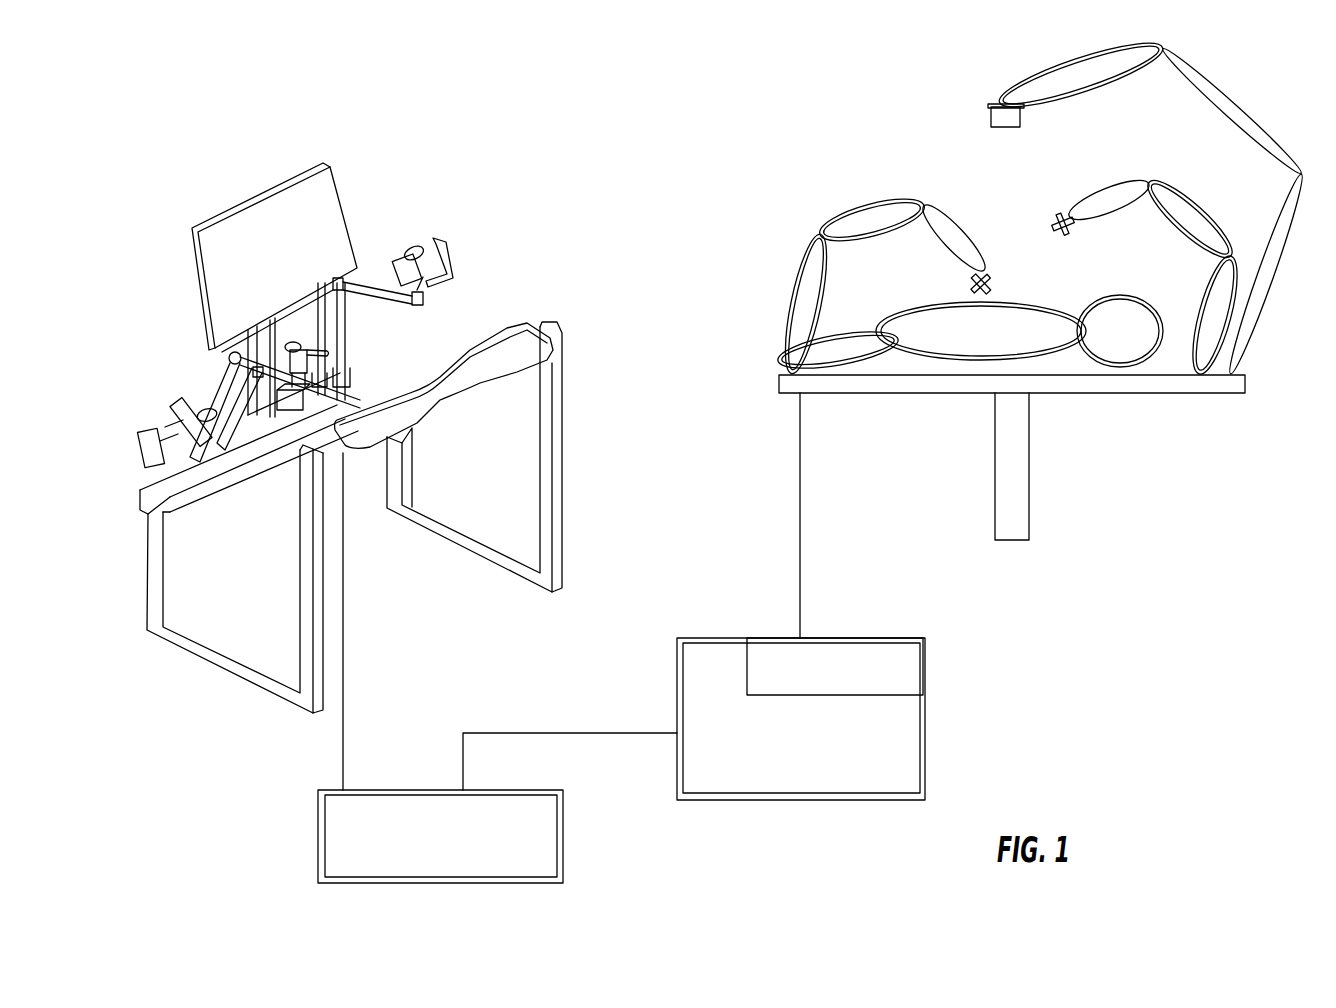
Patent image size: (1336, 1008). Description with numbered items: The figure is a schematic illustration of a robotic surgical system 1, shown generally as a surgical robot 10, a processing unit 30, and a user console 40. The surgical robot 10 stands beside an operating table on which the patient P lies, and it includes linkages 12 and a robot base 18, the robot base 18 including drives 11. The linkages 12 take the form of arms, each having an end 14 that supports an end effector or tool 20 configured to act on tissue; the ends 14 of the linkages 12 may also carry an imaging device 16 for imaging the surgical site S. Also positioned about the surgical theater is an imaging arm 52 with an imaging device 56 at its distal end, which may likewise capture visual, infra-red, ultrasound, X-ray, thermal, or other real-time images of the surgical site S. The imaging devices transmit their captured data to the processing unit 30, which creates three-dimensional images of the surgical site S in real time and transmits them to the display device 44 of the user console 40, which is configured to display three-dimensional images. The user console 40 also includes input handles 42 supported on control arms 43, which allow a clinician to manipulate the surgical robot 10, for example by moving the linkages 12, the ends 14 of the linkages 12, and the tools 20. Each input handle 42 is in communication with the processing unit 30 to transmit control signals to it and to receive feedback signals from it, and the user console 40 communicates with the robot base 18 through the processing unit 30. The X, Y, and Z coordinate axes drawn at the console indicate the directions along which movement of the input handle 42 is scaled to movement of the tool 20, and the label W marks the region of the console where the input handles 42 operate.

The robotic surgical system 1 is at (540, 115).
The surgical robot 10 is at (881, 93).
The drives 11 is at (897, 652).
The linkages 12 is at (1243, 182).
The end 14 is at (1075, 198).
The imaging device 16 is at (1063, 215).
The robot base 18 is at (812, 745).
The end effector or tool 20 is at (1052, 227).
The processing unit 30 is at (455, 847).
The user console 40 is at (202, 158).
The input handles 42 is at (362, 368).
The control arms 43 is at (395, 255).
The display device 44 is at (338, 187).
The imaging arm 52 is at (1254, 115).
The imaging device 56 is at (991, 116).
The patient P is at (1027, 341).
The surgical site S is at (1038, 306).
The workspace W is at (446, 190).
The X coordinate axis X is at (276, 321).
The Y coordinate axis Y is at (204, 300).
The Z coordinate axis Z is at (232, 318).